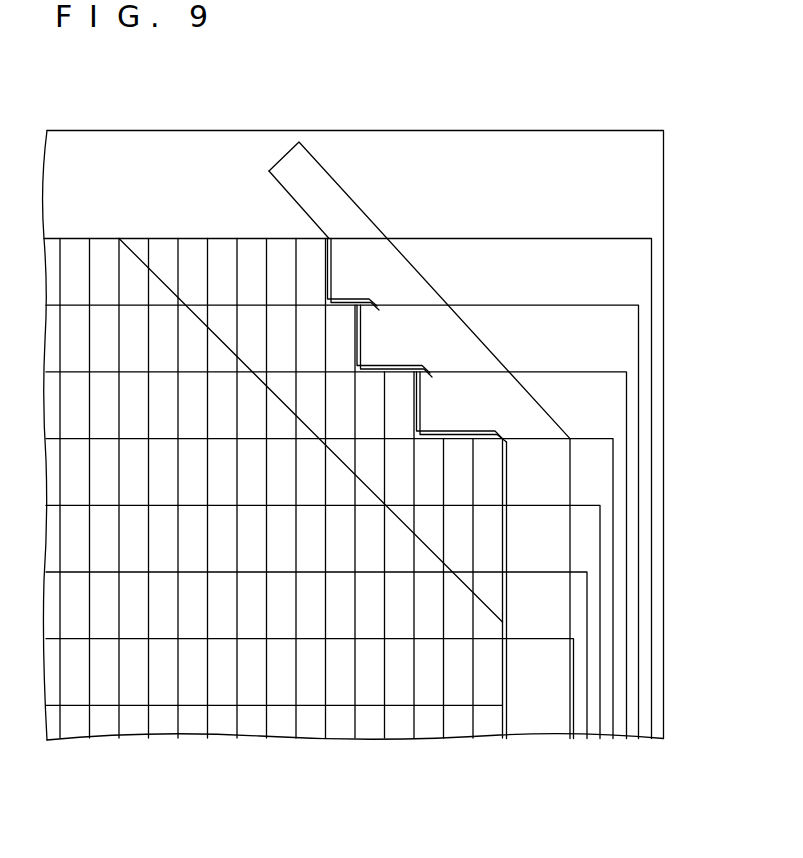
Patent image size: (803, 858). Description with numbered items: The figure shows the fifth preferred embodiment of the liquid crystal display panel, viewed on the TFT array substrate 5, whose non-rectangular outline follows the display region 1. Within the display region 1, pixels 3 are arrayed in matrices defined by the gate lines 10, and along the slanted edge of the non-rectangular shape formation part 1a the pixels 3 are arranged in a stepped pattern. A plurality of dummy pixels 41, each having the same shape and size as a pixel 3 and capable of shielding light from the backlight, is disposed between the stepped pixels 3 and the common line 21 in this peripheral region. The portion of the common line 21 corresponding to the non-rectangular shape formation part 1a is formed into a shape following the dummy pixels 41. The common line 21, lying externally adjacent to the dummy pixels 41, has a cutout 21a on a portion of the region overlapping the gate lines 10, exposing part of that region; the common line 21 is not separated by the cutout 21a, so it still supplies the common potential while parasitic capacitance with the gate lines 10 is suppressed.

The display region 1 is at (131, 249).
The non-rectangular shape formation part 1a is at (310, 402).
The pixel 3 is at (74, 249).
The dummy pixel 41 is at (250, 249).
The common line 21 is at (411, 265).
The cutout 21a is at (368, 300).
The gate line 10 is at (652, 422).
The TFT array substrate 5 is at (658, 670).